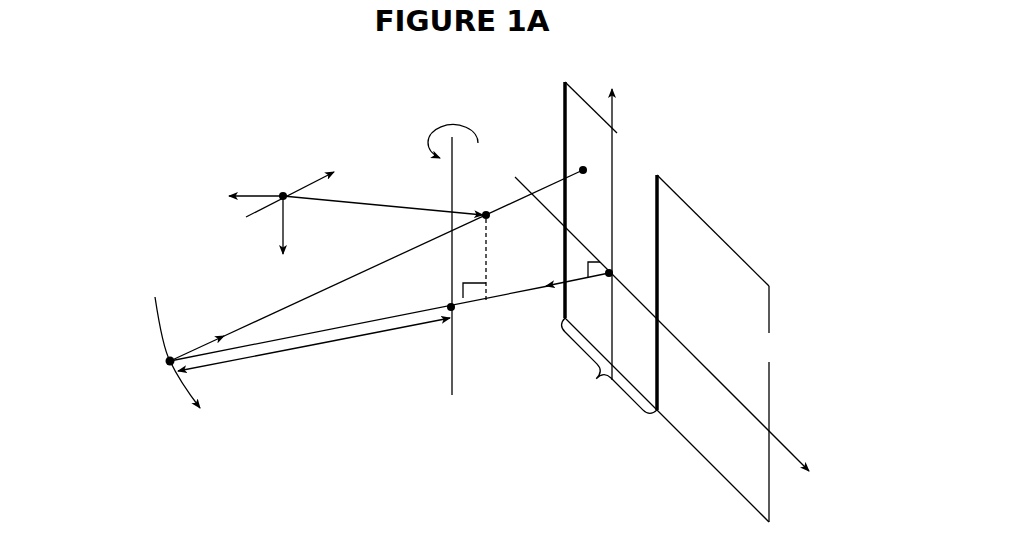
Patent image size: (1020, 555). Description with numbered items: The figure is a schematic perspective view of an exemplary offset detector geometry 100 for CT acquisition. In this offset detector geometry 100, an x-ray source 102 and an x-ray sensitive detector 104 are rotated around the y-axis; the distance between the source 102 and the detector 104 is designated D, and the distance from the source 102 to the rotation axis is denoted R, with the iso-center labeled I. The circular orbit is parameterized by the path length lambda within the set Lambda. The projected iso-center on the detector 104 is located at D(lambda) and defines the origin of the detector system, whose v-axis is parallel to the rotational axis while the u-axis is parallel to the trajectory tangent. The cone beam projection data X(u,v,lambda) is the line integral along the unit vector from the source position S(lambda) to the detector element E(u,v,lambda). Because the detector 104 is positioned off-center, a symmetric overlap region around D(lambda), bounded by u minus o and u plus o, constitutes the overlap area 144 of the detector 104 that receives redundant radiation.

The offset detector geometry 100 is at (186, 132).
The x-ray source 102 is at (168, 360).
The x-ray sensitive detector 104 is at (685, 225).
The overlap area 144 is at (645, 379).